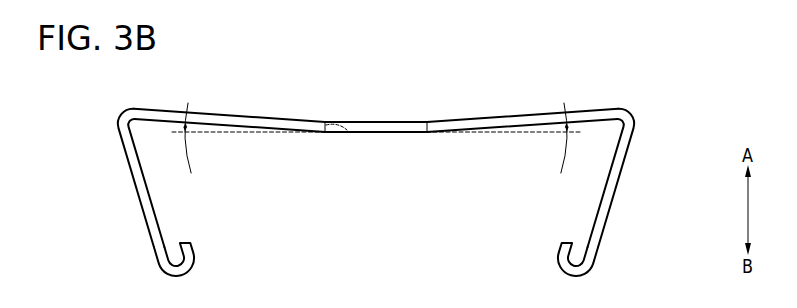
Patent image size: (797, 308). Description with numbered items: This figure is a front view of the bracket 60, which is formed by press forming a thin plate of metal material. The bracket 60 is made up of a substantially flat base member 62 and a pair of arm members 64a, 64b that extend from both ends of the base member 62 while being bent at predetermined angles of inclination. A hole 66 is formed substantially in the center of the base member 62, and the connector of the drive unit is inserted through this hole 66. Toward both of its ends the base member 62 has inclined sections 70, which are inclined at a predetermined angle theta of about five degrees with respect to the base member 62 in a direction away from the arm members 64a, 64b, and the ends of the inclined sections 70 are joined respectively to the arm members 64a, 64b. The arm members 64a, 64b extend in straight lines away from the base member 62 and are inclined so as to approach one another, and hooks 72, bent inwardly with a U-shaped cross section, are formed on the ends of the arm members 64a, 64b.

The bracket 60 is at (612, 104).
The base member 62 is at (453, 133).
The arm member 64a is at (140, 192).
The arm member 64b is at (615, 190).
The hole 66 is at (347, 135).
The inclined section 70 is at (203, 118).
The hook 72 is at (192, 248).